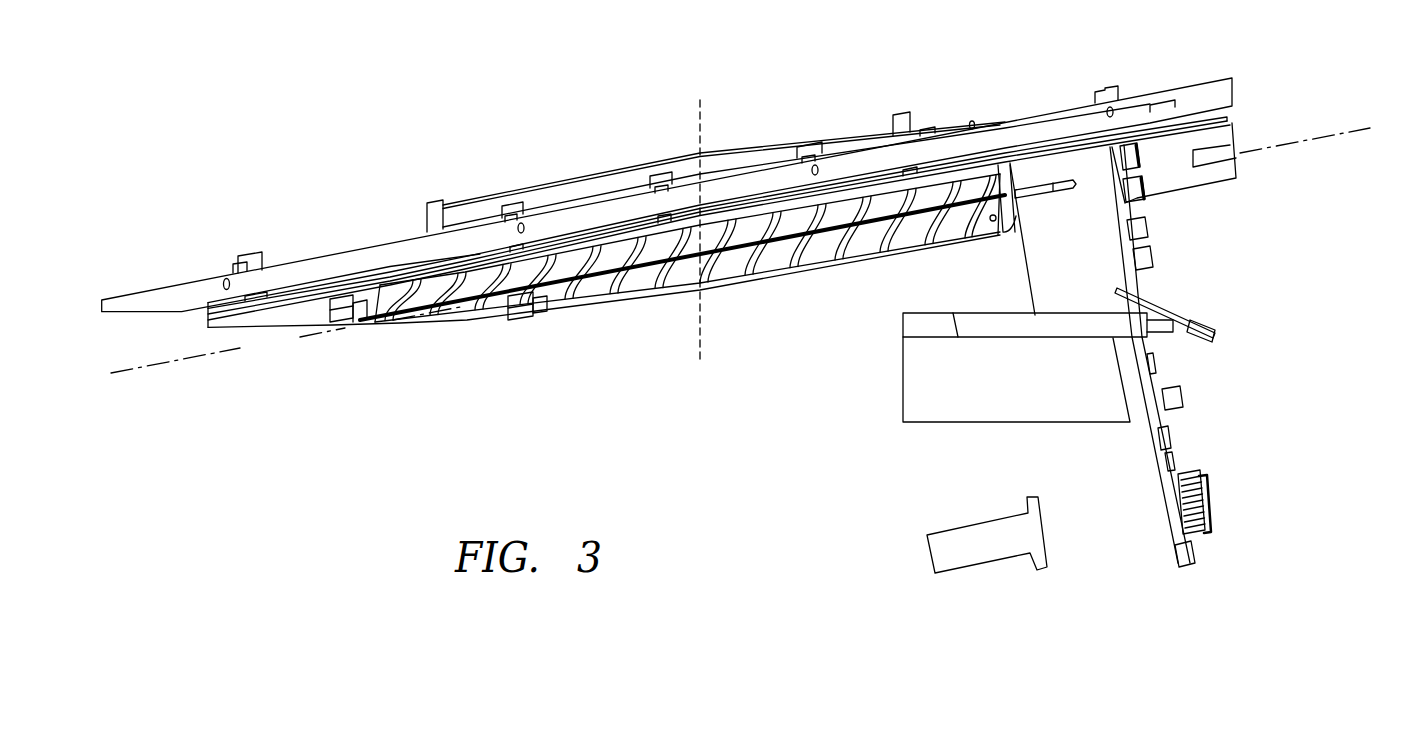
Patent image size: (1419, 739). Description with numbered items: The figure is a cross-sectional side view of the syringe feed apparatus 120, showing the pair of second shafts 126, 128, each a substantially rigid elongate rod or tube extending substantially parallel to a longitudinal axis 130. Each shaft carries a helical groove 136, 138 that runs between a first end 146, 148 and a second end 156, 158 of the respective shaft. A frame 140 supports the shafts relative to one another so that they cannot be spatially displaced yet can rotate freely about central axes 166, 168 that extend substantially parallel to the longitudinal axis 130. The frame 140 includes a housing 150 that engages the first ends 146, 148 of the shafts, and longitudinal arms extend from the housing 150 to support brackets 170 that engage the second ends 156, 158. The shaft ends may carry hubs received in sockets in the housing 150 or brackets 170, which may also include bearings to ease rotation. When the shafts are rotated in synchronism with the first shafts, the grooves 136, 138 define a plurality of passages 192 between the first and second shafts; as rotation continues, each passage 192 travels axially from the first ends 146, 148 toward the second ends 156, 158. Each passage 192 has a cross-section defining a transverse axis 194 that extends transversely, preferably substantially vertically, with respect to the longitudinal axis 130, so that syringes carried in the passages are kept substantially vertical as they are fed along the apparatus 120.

The syringe feed apparatus 120 is at (845, 88).
The frame 140 is at (1023, 108).
The central axis 166 is at (237, 335).
The central axis 168 is at (430, 338).
The second shaft 126 is at (632, 255).
The second shaft 128 is at (718, 270).
The helical groove 136 is at (840, 225).
The helical groove 138 is at (788, 270).
The passage 192 is at (740, 222).
The transverse axis 194 is at (698, 108).
The longitudinal axis 130 is at (175, 362).
The bracket 170 is at (343, 320).
The second end 156 is at (360, 320).
The second end 158 is at (543, 314).
The first end 146 is at (1003, 236).
The first end 148 is at (990, 232).
The housing 150 is at (1115, 228).